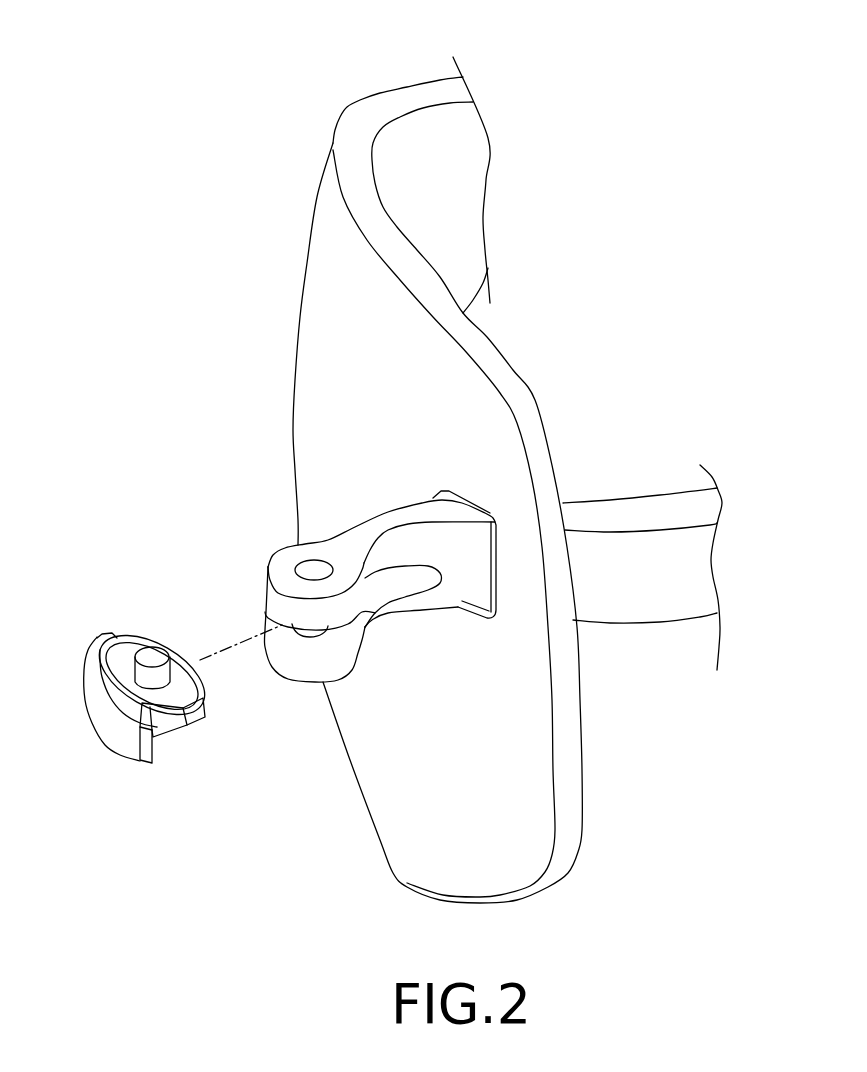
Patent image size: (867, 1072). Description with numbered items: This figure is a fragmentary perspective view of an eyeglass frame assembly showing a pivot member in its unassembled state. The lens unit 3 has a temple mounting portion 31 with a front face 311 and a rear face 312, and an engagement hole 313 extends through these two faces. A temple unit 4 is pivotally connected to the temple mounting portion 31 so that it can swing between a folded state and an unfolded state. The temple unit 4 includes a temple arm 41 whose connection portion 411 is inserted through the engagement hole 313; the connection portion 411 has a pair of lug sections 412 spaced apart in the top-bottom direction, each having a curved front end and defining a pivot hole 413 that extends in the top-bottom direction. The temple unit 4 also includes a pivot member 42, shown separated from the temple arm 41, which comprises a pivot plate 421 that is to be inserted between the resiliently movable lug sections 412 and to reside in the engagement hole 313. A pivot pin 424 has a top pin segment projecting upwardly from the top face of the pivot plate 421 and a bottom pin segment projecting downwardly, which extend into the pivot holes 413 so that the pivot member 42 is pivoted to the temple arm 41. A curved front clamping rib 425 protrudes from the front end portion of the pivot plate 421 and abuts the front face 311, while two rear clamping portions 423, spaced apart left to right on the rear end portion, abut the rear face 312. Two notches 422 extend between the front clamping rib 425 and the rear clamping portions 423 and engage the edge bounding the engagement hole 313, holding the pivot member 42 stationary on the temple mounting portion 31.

The lens unit 3 is at (347, 103).
The temple mounting portion 31 is at (510, 387).
The front face 311 is at (495, 423).
The rear face 312 is at (540, 418).
The engagement hole 313 is at (484, 508).
The temple unit 4 is at (685, 625).
The temple arm 41 is at (690, 583).
The connection portion 411 is at (603, 603).
The lug section 412 is at (278, 595).
The pivot hole 413 is at (308, 575).
The pivot member 42 is at (151, 706).
The pivot plate 421 is at (177, 663).
The notch 422 is at (163, 727).
The rear clamping portion 423 is at (193, 727).
The pivot pin 424 is at (150, 653).
The front clamping rib 425 is at (103, 687).